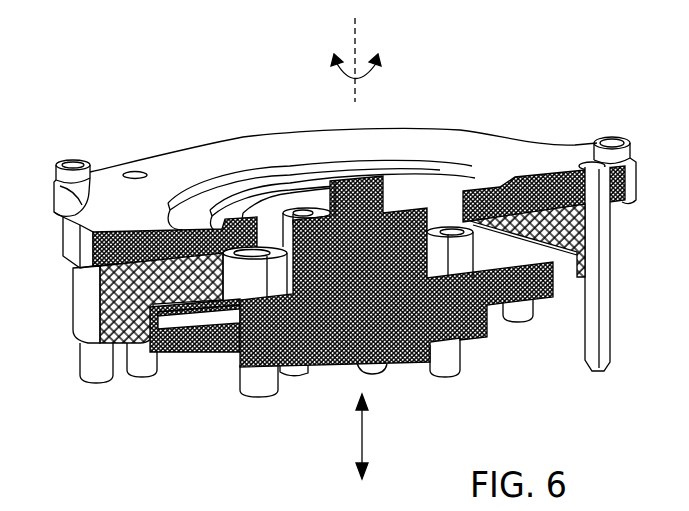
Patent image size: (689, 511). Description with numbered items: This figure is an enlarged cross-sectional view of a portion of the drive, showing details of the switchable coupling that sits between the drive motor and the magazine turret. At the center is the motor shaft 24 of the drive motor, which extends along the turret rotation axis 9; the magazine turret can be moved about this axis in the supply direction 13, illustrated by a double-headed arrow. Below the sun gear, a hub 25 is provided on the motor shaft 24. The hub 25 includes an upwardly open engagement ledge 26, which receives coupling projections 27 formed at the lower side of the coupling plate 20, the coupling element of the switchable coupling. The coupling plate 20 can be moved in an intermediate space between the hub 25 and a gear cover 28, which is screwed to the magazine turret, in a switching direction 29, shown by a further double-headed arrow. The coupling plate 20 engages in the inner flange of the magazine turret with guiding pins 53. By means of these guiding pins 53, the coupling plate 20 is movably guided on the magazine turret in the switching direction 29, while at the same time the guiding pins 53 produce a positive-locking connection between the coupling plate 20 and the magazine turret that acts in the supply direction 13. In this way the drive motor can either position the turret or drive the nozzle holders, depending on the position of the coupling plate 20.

The turret rotation axis 9 is at (356, 34).
The supply direction 13 is at (382, 70).
The coupling plate 20 is at (73, 310).
The motor shaft 24 is at (388, 296).
The hub 25 is at (537, 282).
The engagement ledge 26 is at (200, 345).
The coupling projections 27 is at (180, 294).
The gear cover 28 is at (103, 190).
The switching direction 29 is at (366, 437).
The guiding pins 53 is at (77, 352).